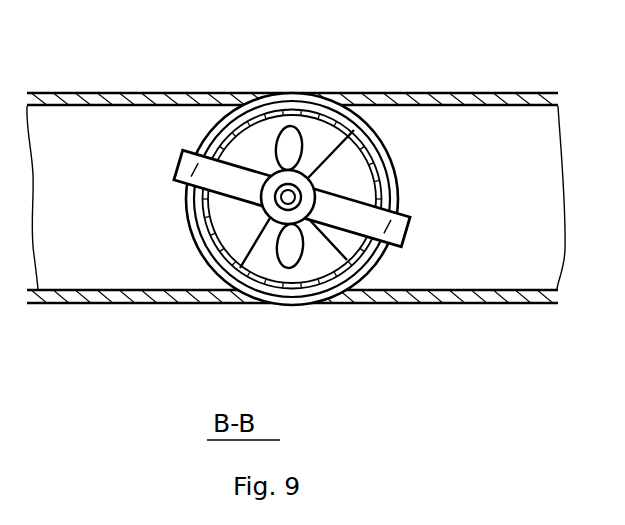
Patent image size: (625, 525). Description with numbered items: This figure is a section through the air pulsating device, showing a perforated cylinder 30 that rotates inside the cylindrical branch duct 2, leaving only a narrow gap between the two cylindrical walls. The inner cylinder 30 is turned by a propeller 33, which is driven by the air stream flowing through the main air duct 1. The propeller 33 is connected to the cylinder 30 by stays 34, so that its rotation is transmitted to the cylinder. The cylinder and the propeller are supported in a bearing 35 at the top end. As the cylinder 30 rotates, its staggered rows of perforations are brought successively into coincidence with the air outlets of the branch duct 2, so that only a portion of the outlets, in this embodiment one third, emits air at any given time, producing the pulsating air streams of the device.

The main air duct 1 is at (96, 98).
The cylindrical branch duct 2 is at (225, 118).
The perforated cylinder 30 is at (240, 292).
The propeller 33 is at (291, 142).
The stays 34 is at (340, 158).
The bearing 35 is at (272, 207).